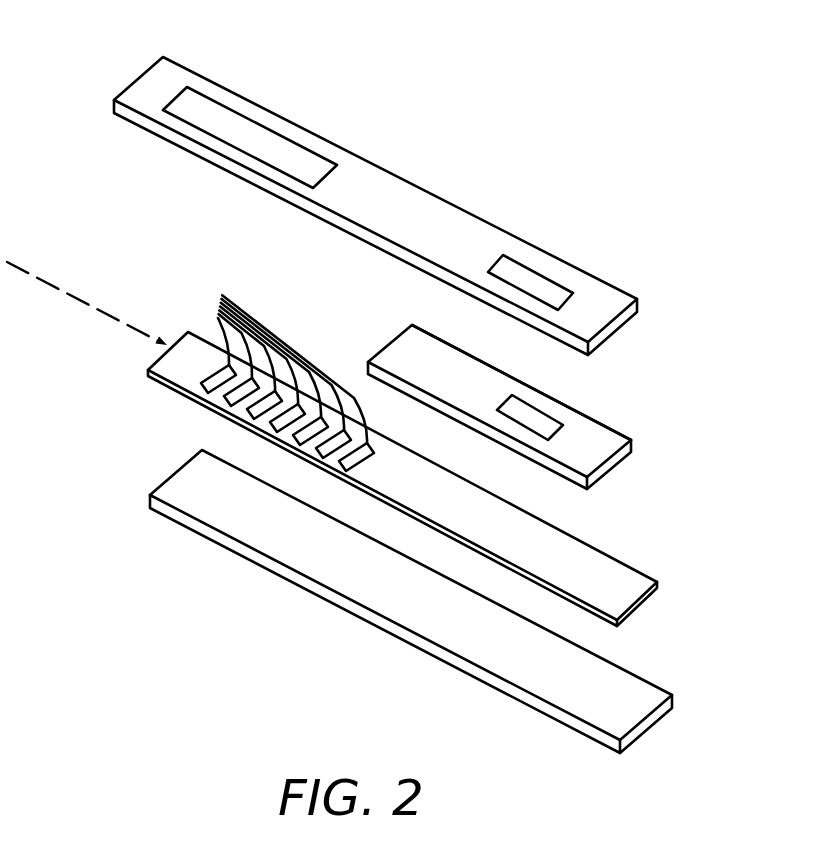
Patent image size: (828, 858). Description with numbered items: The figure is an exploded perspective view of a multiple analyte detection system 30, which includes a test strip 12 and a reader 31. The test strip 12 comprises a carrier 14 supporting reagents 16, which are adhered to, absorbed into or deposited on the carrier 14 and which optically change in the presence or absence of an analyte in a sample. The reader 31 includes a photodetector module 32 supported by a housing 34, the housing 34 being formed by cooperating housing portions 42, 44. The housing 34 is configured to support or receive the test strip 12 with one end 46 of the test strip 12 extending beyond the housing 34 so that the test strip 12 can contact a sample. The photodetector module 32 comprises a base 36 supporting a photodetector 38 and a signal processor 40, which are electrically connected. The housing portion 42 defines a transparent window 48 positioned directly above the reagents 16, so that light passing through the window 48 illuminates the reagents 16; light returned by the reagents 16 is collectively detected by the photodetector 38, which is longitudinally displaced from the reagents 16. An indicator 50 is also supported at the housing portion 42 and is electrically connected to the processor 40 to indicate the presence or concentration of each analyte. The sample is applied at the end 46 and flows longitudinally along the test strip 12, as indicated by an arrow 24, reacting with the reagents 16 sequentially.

The multiple analyte detection system 30 is at (430, 70).
The housing 34 is at (126, 89).
The housing portion 42 is at (450, 213).
The transparent window 48 is at (205, 102).
The indicator 50 is at (522, 268).
The housing portion 44 is at (373, 602).
The photodetector module 32 is at (616, 424).
The photodetector 38 is at (443, 348).
The base 36 is at (577, 463).
The signal processor 40 is at (533, 394).
The test strip 12 is at (625, 556).
The carrier 14 is at (597, 598).
The end of test strip 46 is at (163, 358).
The reagents 16 is at (274, 366).
The reader 31 is at (633, 333).
The arrow 24 is at (88, 300).